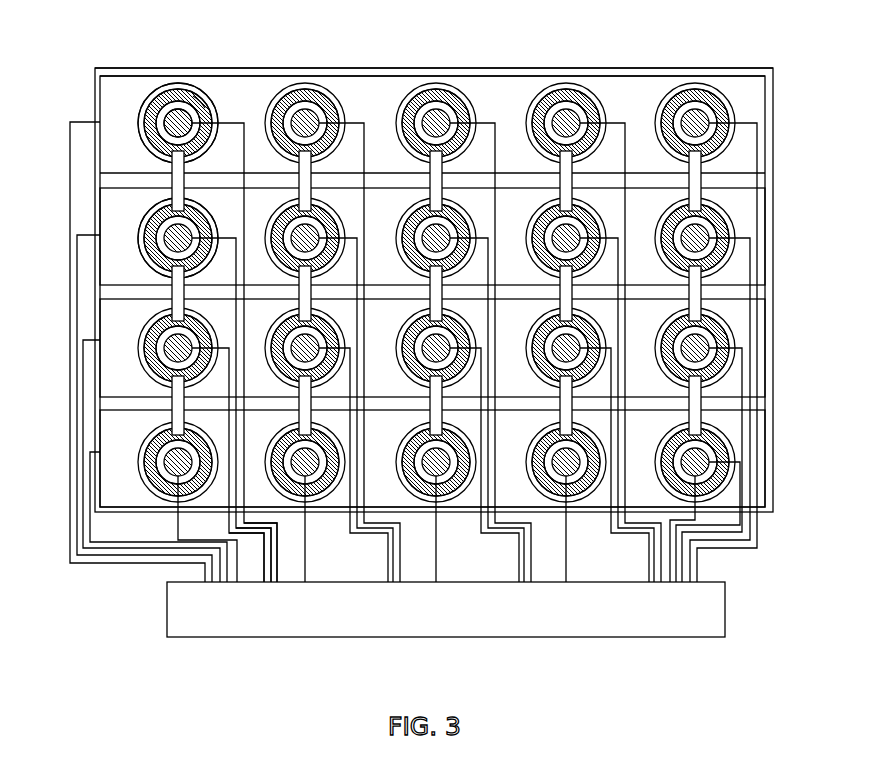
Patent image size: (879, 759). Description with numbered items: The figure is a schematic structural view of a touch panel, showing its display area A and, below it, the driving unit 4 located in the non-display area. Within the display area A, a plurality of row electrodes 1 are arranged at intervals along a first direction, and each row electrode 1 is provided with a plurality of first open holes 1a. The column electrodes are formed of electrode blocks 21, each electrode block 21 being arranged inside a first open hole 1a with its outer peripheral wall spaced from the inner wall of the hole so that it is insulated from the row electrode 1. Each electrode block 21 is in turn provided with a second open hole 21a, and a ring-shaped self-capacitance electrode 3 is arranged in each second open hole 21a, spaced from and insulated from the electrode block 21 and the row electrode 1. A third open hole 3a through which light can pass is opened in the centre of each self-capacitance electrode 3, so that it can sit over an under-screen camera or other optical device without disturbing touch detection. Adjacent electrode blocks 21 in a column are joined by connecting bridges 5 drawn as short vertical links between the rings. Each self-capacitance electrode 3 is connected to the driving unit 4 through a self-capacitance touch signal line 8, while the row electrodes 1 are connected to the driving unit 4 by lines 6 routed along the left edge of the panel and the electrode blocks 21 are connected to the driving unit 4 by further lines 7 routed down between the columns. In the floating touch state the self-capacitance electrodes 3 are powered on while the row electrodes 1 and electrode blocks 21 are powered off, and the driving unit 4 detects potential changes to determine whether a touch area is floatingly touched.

The row electrode 1 is at (755, 98).
The first open hole 1a is at (182, 82).
The self-capacitance electrode 3 is at (150, 124).
The third open hole 3a is at (170, 118).
The driving unit 4 is at (510, 624).
The connecting bridge 5 is at (165, 184).
The row lead wires 6 is at (68, 300).
The column lead wires 7 is at (238, 573).
The self-capacitance touch signal line 8 is at (268, 566).
The electrode block 21 is at (168, 96).
The second open hole 21a is at (192, 104).
The display area A is at (506, 67).